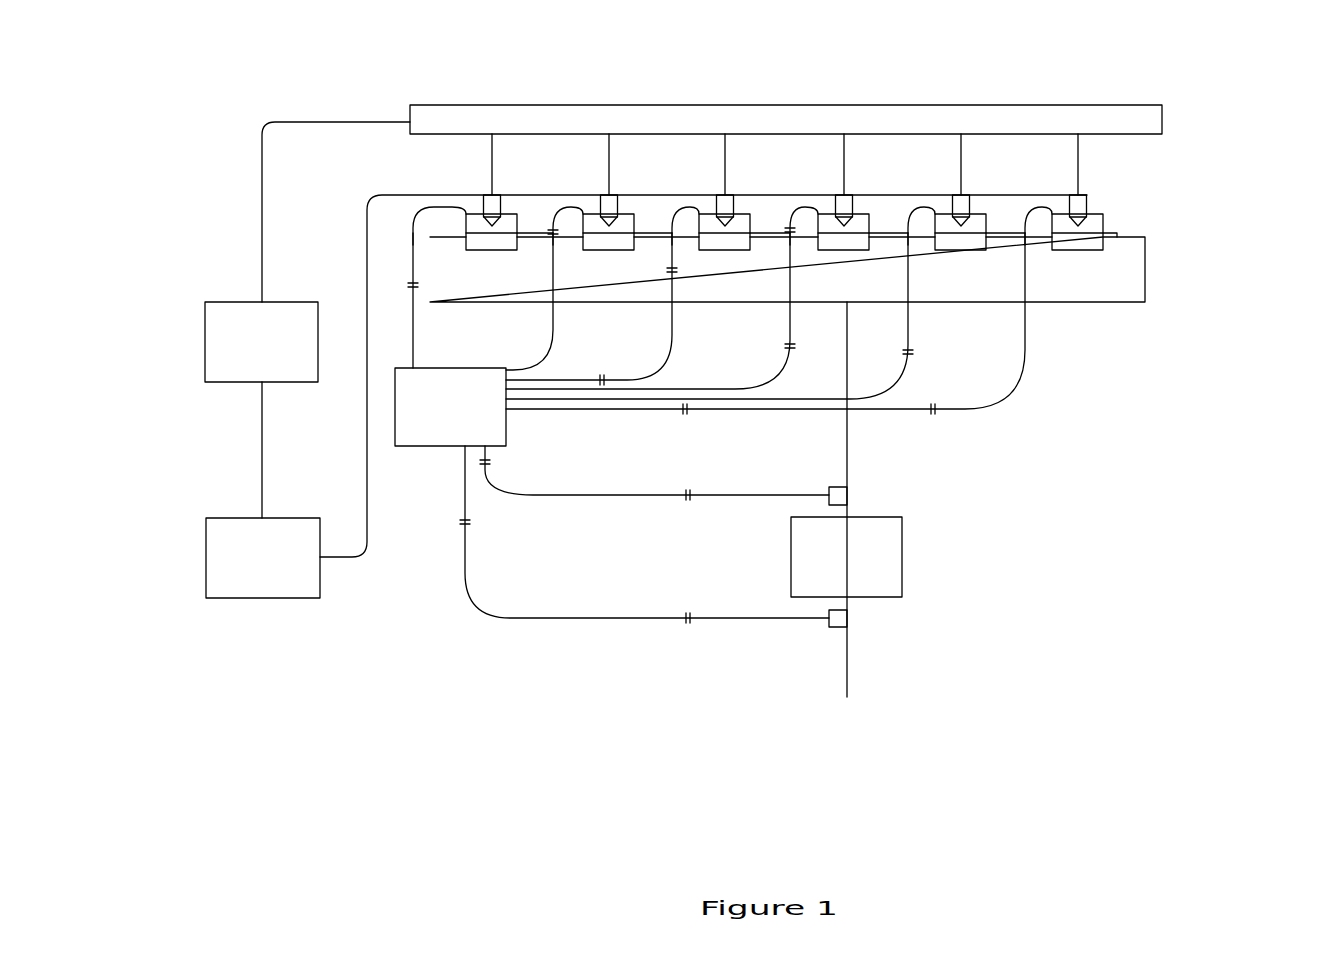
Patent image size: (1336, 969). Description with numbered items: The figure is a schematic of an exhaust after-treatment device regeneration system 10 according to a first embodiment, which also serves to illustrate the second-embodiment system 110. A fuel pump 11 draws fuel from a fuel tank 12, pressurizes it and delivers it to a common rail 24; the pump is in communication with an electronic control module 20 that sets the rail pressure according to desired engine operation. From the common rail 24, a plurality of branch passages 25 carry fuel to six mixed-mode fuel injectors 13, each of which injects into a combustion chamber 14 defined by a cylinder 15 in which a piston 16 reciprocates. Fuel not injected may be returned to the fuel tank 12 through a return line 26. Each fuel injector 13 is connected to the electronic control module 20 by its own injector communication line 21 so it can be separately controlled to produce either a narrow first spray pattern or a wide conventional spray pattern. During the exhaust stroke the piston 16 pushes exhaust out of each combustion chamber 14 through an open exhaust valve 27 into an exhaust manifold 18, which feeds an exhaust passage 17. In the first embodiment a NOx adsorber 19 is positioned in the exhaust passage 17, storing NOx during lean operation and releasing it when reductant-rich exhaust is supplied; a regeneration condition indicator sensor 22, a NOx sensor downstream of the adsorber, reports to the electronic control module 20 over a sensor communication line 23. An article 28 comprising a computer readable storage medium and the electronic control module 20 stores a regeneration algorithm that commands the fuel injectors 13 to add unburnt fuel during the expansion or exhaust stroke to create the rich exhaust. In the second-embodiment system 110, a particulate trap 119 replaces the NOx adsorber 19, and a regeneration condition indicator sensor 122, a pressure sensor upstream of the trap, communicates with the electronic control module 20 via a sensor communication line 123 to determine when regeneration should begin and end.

The exhaust after-treatment device regeneration system 10 is at (1160, 72).
The exhaust after-treatment device regeneration system 110 is at (1231, 56).
The fuel pump 11 is at (205, 305).
The fuel tank 12 is at (320, 580).
The mixed-mode fuel injector 13 is at (601, 197).
The combustion chamber 14 is at (516, 223).
The cylinder 15 is at (517, 236).
The piston 16 is at (472, 251).
The exhaust passage 17 is at (849, 440).
The exhaust manifold 18 is at (1145, 268).
The NOx adsorber 19 is at (902, 548).
The electronic control module 20 is at (450, 447).
The injector communication line 21 is at (413, 318).
The regeneration condition indicator sensor 22 is at (827, 620).
The sensor communication line 23 is at (605, 620).
The common rail 24 is at (762, 104).
The branch passage 25 is at (492, 173).
The return line 26 is at (367, 460).
The exhaust valve 27 is at (465, 240).
The article 28 is at (455, 449).
The particulate trap 119 is at (885, 597).
The regeneration condition indicator sensor 122 is at (826, 492).
The sensor communication line 123 is at (605, 497).